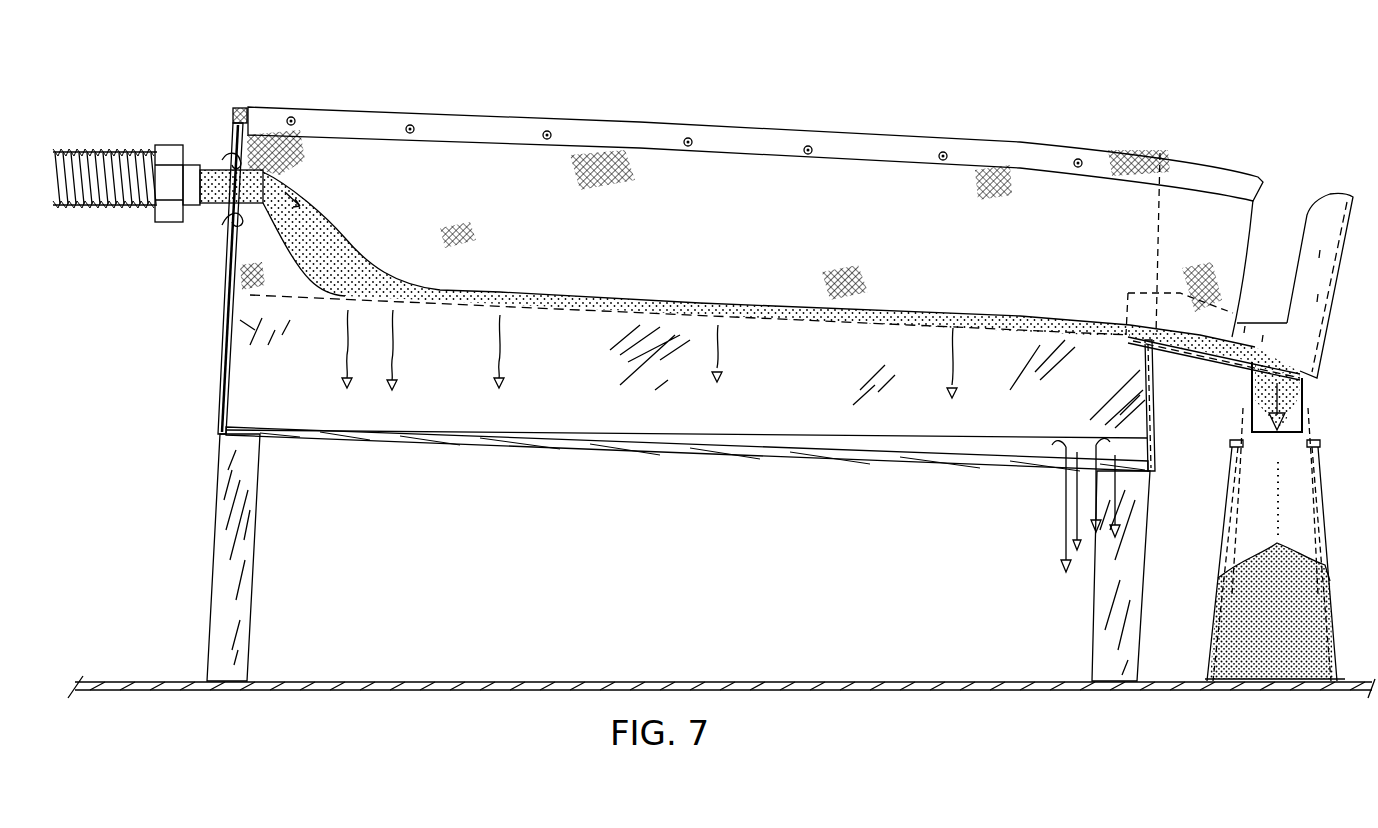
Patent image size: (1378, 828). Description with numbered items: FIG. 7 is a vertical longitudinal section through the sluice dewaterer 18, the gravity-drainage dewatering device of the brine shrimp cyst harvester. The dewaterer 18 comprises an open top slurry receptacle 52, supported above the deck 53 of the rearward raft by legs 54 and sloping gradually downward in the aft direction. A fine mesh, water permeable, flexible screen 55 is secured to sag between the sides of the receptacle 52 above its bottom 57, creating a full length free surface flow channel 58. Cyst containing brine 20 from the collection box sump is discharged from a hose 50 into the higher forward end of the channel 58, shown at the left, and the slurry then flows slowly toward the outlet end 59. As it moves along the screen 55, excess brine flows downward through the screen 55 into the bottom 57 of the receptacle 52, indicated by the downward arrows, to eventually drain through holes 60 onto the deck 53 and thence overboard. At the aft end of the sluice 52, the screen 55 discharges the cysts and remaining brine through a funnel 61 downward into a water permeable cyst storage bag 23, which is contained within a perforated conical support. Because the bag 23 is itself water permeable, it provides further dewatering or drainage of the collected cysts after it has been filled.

The sluice dewaterer 18 is at (625, 132).
The cyst containing brine 20 is at (335, 220).
The cyst storage bag 23 is at (1288, 495).
The hose 50 is at (118, 152).
The slurry receptacle 52 is at (518, 441).
The deck 53 is at (158, 681).
The support leg 54 is at (232, 552).
The screen 55 is at (815, 197).
The bottom of receptacle 57 is at (838, 456).
The screen 58 is at (703, 300).
The outlet end 59 is at (1195, 250).
The holes 60 is at (1065, 486).
The funnel 61 is at (1340, 248).